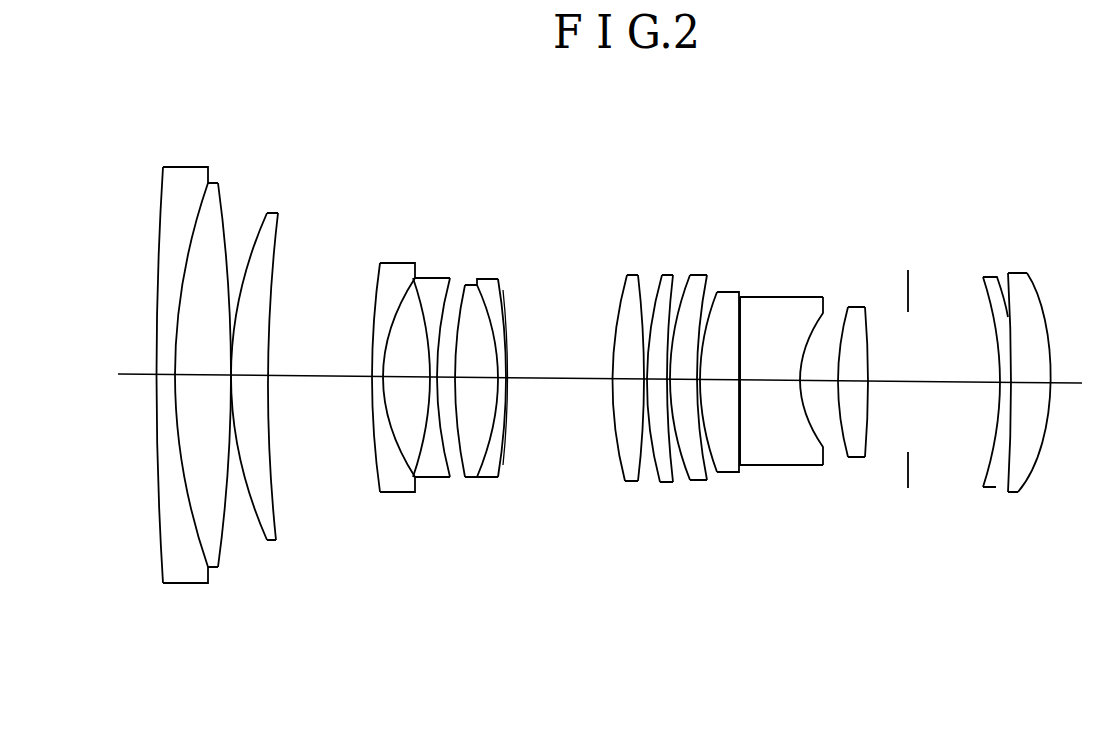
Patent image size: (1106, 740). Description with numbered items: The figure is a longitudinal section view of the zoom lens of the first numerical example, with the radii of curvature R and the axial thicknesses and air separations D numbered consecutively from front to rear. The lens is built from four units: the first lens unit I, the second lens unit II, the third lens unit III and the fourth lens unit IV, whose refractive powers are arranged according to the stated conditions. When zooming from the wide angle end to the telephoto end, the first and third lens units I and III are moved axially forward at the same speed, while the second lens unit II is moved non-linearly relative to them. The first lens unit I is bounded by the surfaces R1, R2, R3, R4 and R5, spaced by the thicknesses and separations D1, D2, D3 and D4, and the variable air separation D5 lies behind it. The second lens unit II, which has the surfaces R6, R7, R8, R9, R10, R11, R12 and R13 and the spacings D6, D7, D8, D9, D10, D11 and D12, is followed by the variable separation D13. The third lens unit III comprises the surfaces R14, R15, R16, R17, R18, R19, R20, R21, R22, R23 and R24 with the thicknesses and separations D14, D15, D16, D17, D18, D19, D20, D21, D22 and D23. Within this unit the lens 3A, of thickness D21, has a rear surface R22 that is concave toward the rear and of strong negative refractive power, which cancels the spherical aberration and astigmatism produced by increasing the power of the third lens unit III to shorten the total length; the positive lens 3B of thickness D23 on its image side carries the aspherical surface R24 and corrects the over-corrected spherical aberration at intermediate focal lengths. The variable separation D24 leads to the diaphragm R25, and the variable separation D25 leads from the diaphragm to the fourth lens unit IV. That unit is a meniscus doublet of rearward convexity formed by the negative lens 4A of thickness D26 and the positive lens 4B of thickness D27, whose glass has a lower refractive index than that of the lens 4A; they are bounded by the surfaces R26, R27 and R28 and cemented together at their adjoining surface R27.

The first lens unit I is at (297, 107).
The second lens unit II is at (302, 167).
The third lens unit III is at (887, 117).
The fourth lens unit IV is at (1080, 158).
The first lens surface R1 is at (160, 290).
The second lens surface R2 is at (190, 262).
The third lens surface R3 is at (227, 262).
The fourth lens surface R4 is at (247, 262).
The fifth lens surface R5 is at (286, 262).
The sixth lens surface R6 is at (364, 300).
The seventh lens surface R7 is at (395, 300).
The eighth lens surface R8 is at (425, 282).
The ninth lens surface R9 is at (439, 282).
The tenth lens surface R10 is at (458, 300).
The eleventh lens surface R11 is at (468, 285).
The twelfth lens surface R12 is at (486, 300).
The thirteenth lens surface R13 is at (515, 300).
The fourteenth lens surface R14 is at (603, 300).
The fifteenth lens surface R15 is at (650, 300).
The sixteenth lens surface R16 is at (638, 275).
The seventeenth lens surface R17 is at (673, 275).
The eighteenth lens surface R18 is at (682, 300).
The nineteenth lens surface R19 is at (710, 275).
The twentieth lens surface R20 is at (730, 292).
The twenty-first lens surface R21 is at (750, 300).
The twenty-second lens surface R22 is at (797, 297).
The twenty-third lens surface R23 is at (840, 307).
The twenty-fourth lens surface R24 is at (873, 307).
The diaphragm R25 is at (910, 285).
The twenty-sixth lens surface R26 is at (988, 310).
The twenty-seventh lens surface R27 is at (1008, 310).
The twenty-eighth lens surface R28 is at (1046, 330).
The axial thickness D1 is at (165, 378).
The axial thickness D2 is at (203, 378).
The air separation D3 is at (236, 478).
The axial thickness D4 is at (250, 378).
The variable air separation D5 is at (320, 378).
The axial thickness D6 is at (371, 380).
The air separation D7 is at (414, 479).
The axial thickness D8 is at (425, 479).
The air separation D9 is at (450, 479).
The axial thickness D10 is at (462, 380).
The air separation D11 is at (487, 479).
The axial thickness D12 is at (505, 380).
The variable air separation D13 is at (567, 380).
The axial thickness D14 is at (630, 384).
The air separation D15 is at (644, 488).
The axial thickness D16 is at (657, 384).
The air separation D17 is at (680, 484).
The axial thickness D18 is at (683, 384).
The air separation D19 is at (713, 474).
The axial thickness D20 is at (723, 384).
The axial thickness D21 is at (767, 384).
The air separation D22 is at (812, 384).
The axial thickness D23 is at (850, 384).
The variable air separation D24 is at (885, 384).
The variable air separation D25 is at (968, 384).
The axial thickness D26 is at (1005, 384).
The axial thickness D27 is at (1013, 492).
The lens 3A is at (833, 588).
The aspherical lens 3B is at (900, 591).
The lens 4A is at (1003, 591).
The lens 4B is at (1038, 591).